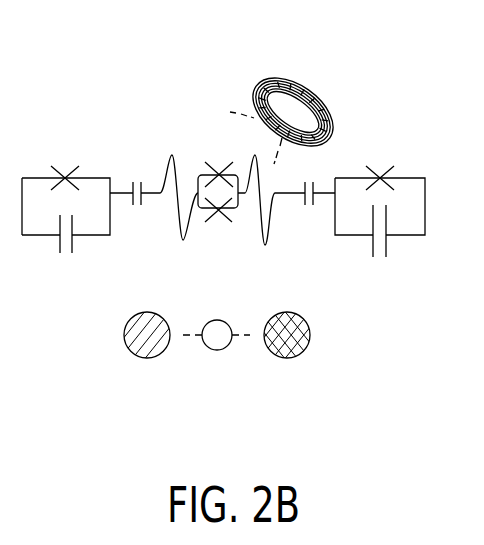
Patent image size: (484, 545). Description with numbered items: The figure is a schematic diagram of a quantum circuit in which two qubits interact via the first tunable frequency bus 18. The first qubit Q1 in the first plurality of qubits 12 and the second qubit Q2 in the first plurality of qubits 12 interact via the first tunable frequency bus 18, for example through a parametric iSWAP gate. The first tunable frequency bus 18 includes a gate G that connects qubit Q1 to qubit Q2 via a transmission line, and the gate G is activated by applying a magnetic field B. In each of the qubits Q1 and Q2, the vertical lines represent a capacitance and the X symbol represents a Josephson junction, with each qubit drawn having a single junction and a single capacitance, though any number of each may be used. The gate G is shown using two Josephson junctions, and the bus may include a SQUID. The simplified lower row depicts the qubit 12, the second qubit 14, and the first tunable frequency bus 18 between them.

The first tunable frequency bus 18 is at (190, 98).
The first plurality of qubits 12 is at (115, 332).
The second qubit 14 is at (283, 357).
The magnetic field B is at (320, 103).
The gate G is at (218, 225).
The first qubit Q1 is at (130, 387).
The second qubit Q2 is at (287, 382).